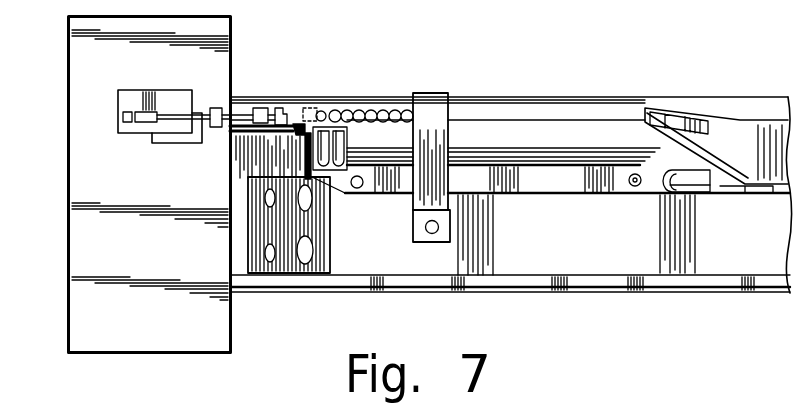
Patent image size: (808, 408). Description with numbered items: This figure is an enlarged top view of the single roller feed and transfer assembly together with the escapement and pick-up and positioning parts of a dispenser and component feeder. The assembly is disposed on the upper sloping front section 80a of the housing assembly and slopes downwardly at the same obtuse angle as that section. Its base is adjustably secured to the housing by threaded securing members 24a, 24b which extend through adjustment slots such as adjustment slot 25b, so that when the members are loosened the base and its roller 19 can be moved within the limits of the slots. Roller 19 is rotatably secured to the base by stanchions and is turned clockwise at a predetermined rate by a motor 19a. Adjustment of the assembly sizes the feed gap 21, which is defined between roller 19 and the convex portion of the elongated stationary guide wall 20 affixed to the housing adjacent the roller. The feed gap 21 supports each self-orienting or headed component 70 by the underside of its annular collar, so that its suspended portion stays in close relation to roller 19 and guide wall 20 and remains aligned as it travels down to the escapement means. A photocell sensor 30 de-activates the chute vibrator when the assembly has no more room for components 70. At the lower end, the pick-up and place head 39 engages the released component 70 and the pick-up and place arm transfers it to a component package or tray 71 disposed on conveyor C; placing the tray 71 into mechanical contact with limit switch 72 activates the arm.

The conveyor C is at (200, 344).
The component package or tray 71 is at (160, 102).
The limit switch 72 is at (180, 140).
The pick-up and place head 39 is at (138, 124).
The self-orienting or headed component 70 is at (376, 113).
The photocell sensor 30 is at (434, 100).
The elongated stationary guide wall 20 is at (522, 112).
The feed gap 21 is at (586, 110).
The roller 19 is at (563, 152).
The motor 19a is at (698, 186).
The threaded securing member 24a is at (340, 196).
The threaded securing member 24b is at (361, 189).
The adjustment slot 25b is at (628, 189).
The upper sloping front section 80a is at (613, 276).